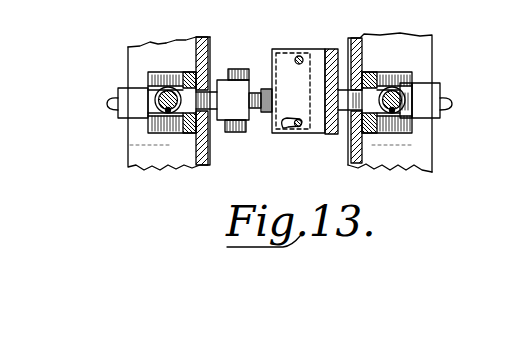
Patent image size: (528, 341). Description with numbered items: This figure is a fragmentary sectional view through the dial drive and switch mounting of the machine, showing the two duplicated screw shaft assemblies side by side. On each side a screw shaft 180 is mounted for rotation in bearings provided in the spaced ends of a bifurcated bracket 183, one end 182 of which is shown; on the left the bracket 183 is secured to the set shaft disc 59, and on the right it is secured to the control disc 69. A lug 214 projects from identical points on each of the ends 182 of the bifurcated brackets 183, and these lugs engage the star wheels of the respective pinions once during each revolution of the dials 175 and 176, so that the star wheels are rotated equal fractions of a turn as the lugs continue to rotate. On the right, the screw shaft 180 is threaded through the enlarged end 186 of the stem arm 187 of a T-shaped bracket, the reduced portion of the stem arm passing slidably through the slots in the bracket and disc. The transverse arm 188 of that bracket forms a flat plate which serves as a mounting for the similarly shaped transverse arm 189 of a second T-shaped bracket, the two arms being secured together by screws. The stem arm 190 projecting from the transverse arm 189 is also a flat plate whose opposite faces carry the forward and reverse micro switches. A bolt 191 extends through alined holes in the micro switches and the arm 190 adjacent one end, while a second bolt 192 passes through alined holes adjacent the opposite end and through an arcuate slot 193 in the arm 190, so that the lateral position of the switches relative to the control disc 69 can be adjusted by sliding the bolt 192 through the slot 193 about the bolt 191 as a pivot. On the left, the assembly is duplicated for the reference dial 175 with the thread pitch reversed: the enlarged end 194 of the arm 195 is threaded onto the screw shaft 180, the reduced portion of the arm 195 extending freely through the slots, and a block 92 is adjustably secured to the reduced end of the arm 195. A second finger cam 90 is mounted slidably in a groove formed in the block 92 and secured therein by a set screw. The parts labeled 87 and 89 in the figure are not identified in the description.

The set shaft disc 59 is at (203, 166).
The control disc 69 is at (352, 135).
The shaft 87 is at (265, 90).
The coupling collar 89 is at (254, 112).
The second finger cam 90 is at (228, 133).
The block 92 is at (225, 90).
The reference dial 175 is at (126, 160).
The dial 176 is at (430, 155).
The screw shaft 180 is at (150, 115).
The end of bifurcated bracket 182 is at (123, 92).
The bifurcated bracket 183 is at (184, 132).
The enlarged end of stem arm 186 is at (414, 84).
The stem arm 187 is at (364, 85).
The transverse arm 188 is at (332, 134).
The transverse arm of second T-shaped bracket 189 is at (350, 52).
The stem arm of second T-shaped bracket 190 is at (277, 55).
The bolt 191 is at (300, 56).
The second bolt 192 is at (299, 128).
The arcuate slot 193 is at (289, 130).
The enlarged end of arm 194 is at (150, 47).
The arm 195 is at (171, 50).
The lug 214 is at (110, 99).